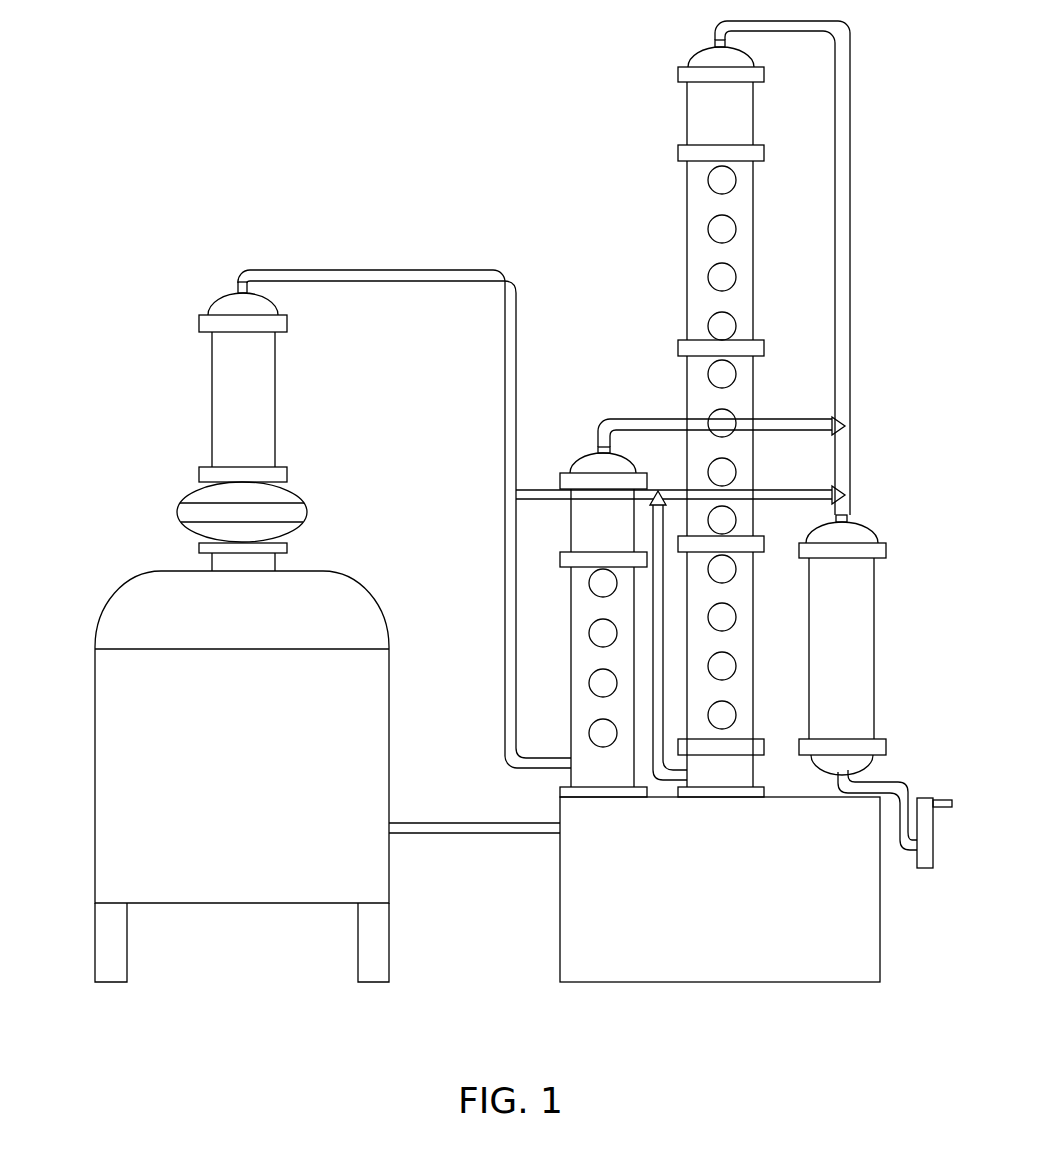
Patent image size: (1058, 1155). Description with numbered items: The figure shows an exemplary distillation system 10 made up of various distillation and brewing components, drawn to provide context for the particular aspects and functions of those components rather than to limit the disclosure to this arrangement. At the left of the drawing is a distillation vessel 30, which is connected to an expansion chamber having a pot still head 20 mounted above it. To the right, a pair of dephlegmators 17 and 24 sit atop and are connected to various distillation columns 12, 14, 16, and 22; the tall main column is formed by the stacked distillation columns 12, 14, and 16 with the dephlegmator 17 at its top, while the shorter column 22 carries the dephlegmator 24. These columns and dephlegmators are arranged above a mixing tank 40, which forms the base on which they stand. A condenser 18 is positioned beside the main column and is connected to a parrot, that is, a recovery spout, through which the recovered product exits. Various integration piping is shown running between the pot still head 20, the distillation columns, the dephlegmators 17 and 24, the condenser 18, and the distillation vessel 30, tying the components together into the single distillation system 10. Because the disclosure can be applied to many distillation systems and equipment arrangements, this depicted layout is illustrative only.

The distillation system 10 is at (235, 183).
The distillation column 12 is at (750, 418).
The distillation column 14 is at (740, 388).
The distillation column 16 is at (740, 232).
The dephlegmator 17 is at (738, 112).
The condenser 18 is at (858, 658).
The pot still head 20 is at (217, 399).
The distillation column 22 is at (582, 657).
The dephlegmator 24 is at (581, 518).
The distillation vessel 30 is at (118, 785).
The mixing tank 40 is at (863, 933).